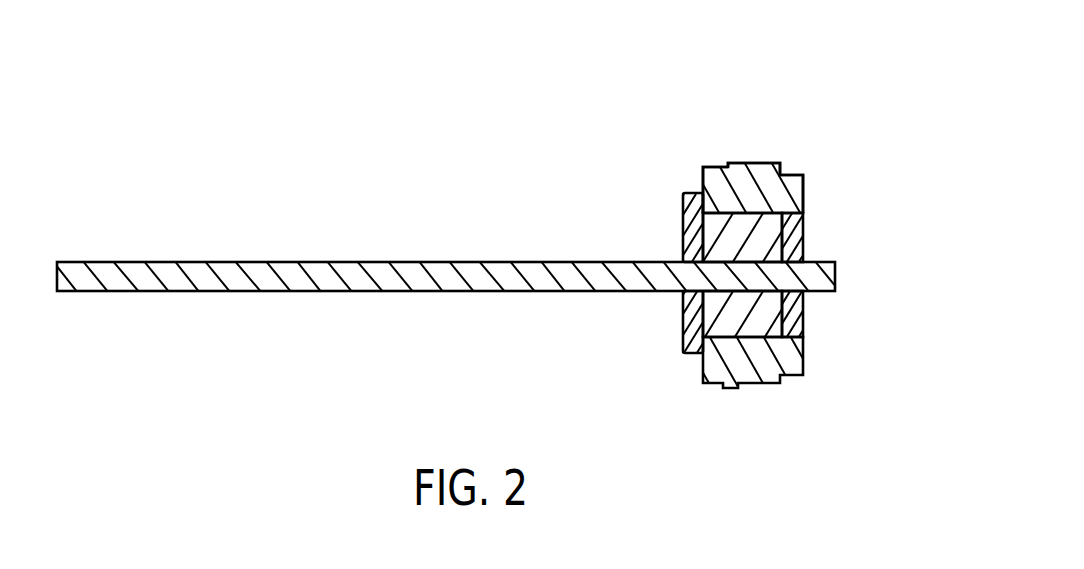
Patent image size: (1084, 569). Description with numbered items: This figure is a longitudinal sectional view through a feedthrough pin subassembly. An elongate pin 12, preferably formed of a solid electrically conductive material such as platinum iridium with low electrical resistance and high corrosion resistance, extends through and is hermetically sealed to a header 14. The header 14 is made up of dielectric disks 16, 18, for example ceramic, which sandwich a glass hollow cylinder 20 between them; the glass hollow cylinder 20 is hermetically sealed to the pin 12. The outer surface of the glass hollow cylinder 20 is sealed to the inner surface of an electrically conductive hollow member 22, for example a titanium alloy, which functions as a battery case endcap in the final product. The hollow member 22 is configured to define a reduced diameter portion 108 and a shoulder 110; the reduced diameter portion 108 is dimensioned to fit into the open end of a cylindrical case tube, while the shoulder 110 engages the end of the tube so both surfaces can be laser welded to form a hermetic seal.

The elongate pin 12 is at (330, 273).
The header 14 is at (780, 165).
The dielectric disk 16 is at (704, 336).
The dielectric disk 18 is at (805, 232).
The glass hollow cylinder 20 is at (765, 315).
The electrically conductive hollow member 22 is at (805, 175).
The reduced diameter portion 108 is at (710, 166).
The shoulder 110 is at (725, 163).